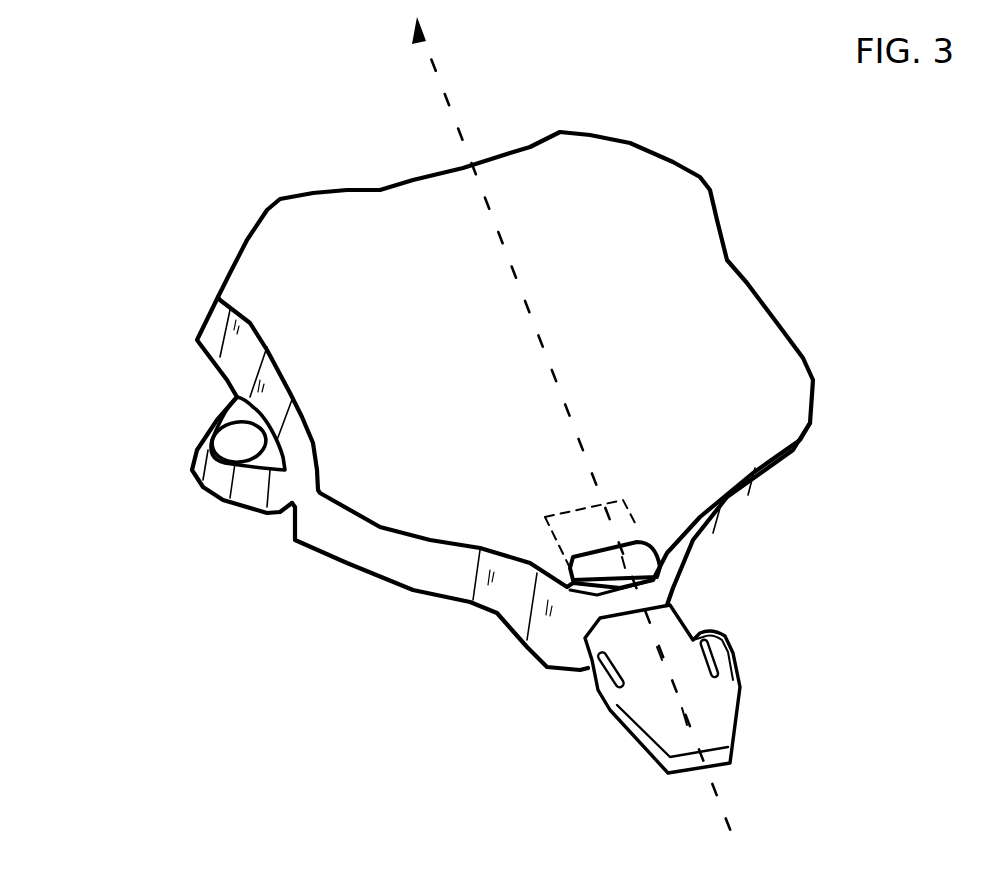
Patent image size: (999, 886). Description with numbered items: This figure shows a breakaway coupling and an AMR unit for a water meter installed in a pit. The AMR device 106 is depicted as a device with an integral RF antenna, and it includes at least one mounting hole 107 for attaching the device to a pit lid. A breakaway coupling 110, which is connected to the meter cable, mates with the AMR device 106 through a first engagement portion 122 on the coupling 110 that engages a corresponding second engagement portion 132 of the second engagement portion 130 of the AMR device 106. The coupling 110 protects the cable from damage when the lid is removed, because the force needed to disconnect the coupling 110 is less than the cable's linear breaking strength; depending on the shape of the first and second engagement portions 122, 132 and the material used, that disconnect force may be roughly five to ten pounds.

The AMR device 106 is at (748, 277).
The mounting hole 107 is at (228, 440).
The breakaway coupling 110 is at (668, 689).
The first engagement portion 122 is at (722, 640).
The second engagement portion 130 is at (637, 523).
The second engagement portion 132 is at (663, 557).